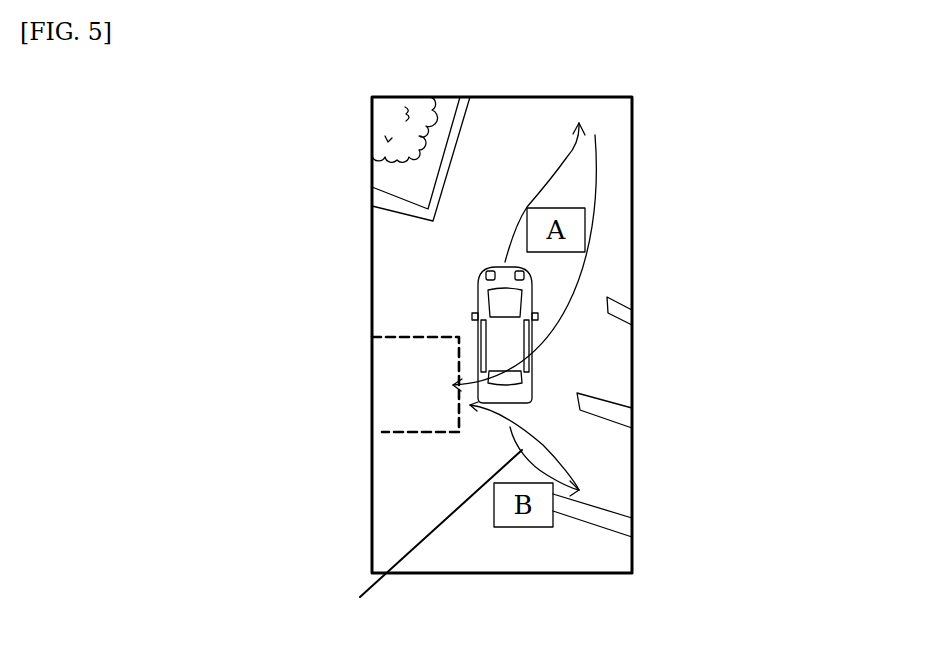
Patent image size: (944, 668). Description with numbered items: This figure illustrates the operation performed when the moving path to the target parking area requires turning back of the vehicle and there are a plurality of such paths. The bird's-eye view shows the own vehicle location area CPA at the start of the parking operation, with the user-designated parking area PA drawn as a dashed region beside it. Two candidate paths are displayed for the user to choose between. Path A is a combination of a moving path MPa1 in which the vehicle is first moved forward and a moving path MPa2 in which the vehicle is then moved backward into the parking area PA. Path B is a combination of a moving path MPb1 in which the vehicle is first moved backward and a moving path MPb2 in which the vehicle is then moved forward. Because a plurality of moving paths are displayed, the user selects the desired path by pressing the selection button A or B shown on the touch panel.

The moving path MPa1 is at (575, 152).
The moving path MPa2 is at (593, 190).
The moving path MPb1 is at (466, 487).
The moving path MPb2 is at (567, 465).
The own vehicle location area CPA is at (533, 373).
The parking area PA is at (402, 445).